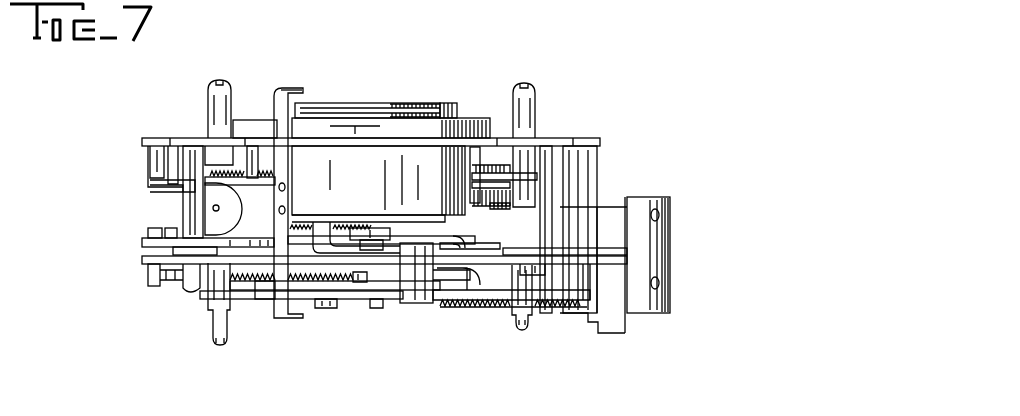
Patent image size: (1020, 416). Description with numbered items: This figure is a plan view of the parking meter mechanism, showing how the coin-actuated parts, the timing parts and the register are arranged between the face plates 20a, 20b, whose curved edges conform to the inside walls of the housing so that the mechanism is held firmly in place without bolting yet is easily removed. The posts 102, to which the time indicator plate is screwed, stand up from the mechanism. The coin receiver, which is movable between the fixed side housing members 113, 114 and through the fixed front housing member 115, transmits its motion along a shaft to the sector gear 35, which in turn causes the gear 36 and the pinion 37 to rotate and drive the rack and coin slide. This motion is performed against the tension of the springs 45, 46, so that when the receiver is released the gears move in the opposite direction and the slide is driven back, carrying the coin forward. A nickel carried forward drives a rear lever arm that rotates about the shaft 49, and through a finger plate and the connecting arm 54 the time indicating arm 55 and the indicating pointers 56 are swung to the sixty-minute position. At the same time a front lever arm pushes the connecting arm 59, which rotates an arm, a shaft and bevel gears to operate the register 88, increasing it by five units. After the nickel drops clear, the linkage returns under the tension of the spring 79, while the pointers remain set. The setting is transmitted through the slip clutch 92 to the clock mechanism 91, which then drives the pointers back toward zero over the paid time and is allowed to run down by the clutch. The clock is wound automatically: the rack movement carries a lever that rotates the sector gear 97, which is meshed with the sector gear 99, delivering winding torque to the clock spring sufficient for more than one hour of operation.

The posts 102 is at (228, 86).
The spring 45 is at (218, 167).
The indicating pointers 56 is at (300, 89).
The sector gear 97 is at (421, 103).
The sector gear 99 is at (454, 111).
The pinion 37 is at (503, 177).
The gear 36 is at (497, 196).
The sector gear 35 is at (506, 209).
The fixed side housing member 113 is at (603, 224).
The fixed front housing member 115 is at (643, 253).
The fixed side housing member 114 is at (612, 320).
The register 88 is at (225, 222).
The clock mechanism 91 is at (378, 184).
The slip clutch 92 is at (379, 237).
The face plate 20b is at (302, 240).
The connecting arm 54 is at (302, 243).
The face plate 20a is at (322, 268).
The time indicating arm 55 is at (281, 287).
The spring 46 is at (257, 281).
The connecting arm 59 is at (356, 300).
The shaft 49 is at (417, 303).
The spring 79 is at (482, 307).